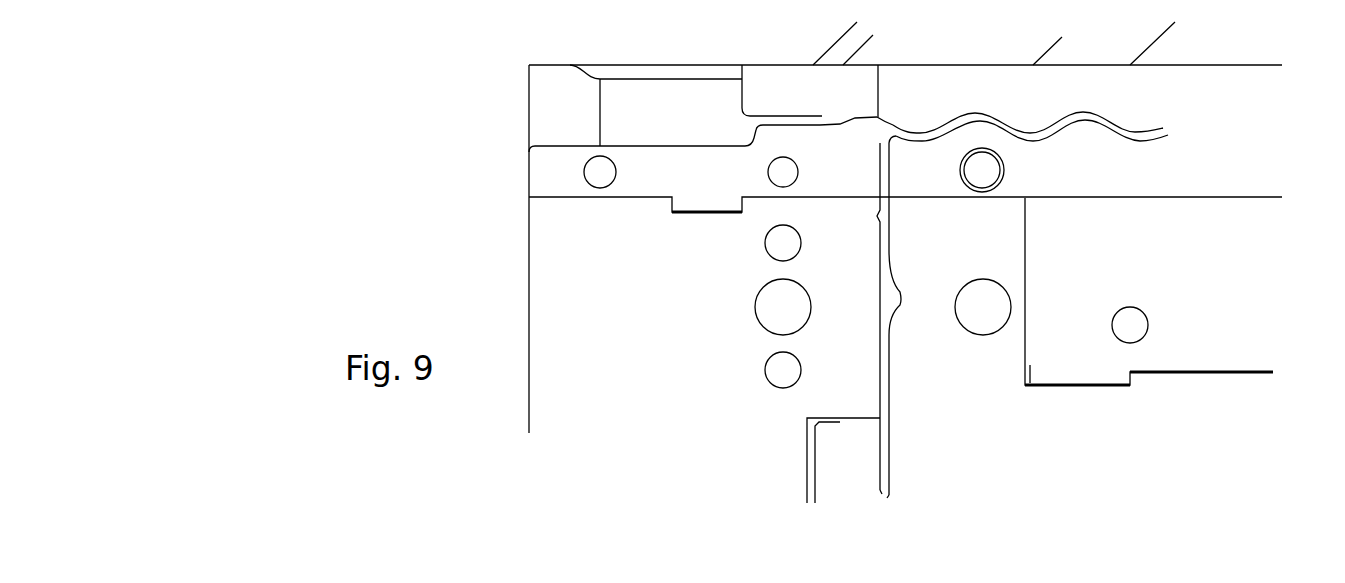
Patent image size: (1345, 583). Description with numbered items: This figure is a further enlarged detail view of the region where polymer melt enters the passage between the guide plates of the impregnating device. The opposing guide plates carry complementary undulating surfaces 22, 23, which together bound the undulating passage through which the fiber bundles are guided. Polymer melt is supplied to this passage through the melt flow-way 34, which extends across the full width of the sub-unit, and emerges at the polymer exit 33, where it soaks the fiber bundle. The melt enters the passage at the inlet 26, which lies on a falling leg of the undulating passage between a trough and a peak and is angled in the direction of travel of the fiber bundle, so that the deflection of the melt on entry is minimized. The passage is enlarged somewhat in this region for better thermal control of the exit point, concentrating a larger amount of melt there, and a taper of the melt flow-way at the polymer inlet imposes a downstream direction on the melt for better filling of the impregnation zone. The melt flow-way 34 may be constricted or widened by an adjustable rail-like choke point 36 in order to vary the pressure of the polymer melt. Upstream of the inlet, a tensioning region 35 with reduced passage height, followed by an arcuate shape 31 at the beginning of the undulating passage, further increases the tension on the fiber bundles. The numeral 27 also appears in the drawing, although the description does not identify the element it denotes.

The undulating surface 22 is at (1150, 143).
The undulating surface 23 is at (1133, 127).
The inlet 26 is at (890, 127).
The cover plate 27 is at (757, 128).
The arcuate shape 31 is at (877, 125).
The polymer exit 33 is at (887, 130).
The melt flow-way 34 is at (883, 390).
The tensioning region 35 is at (847, 120).
The adjustable rail-like choke point 36 is at (890, 477).